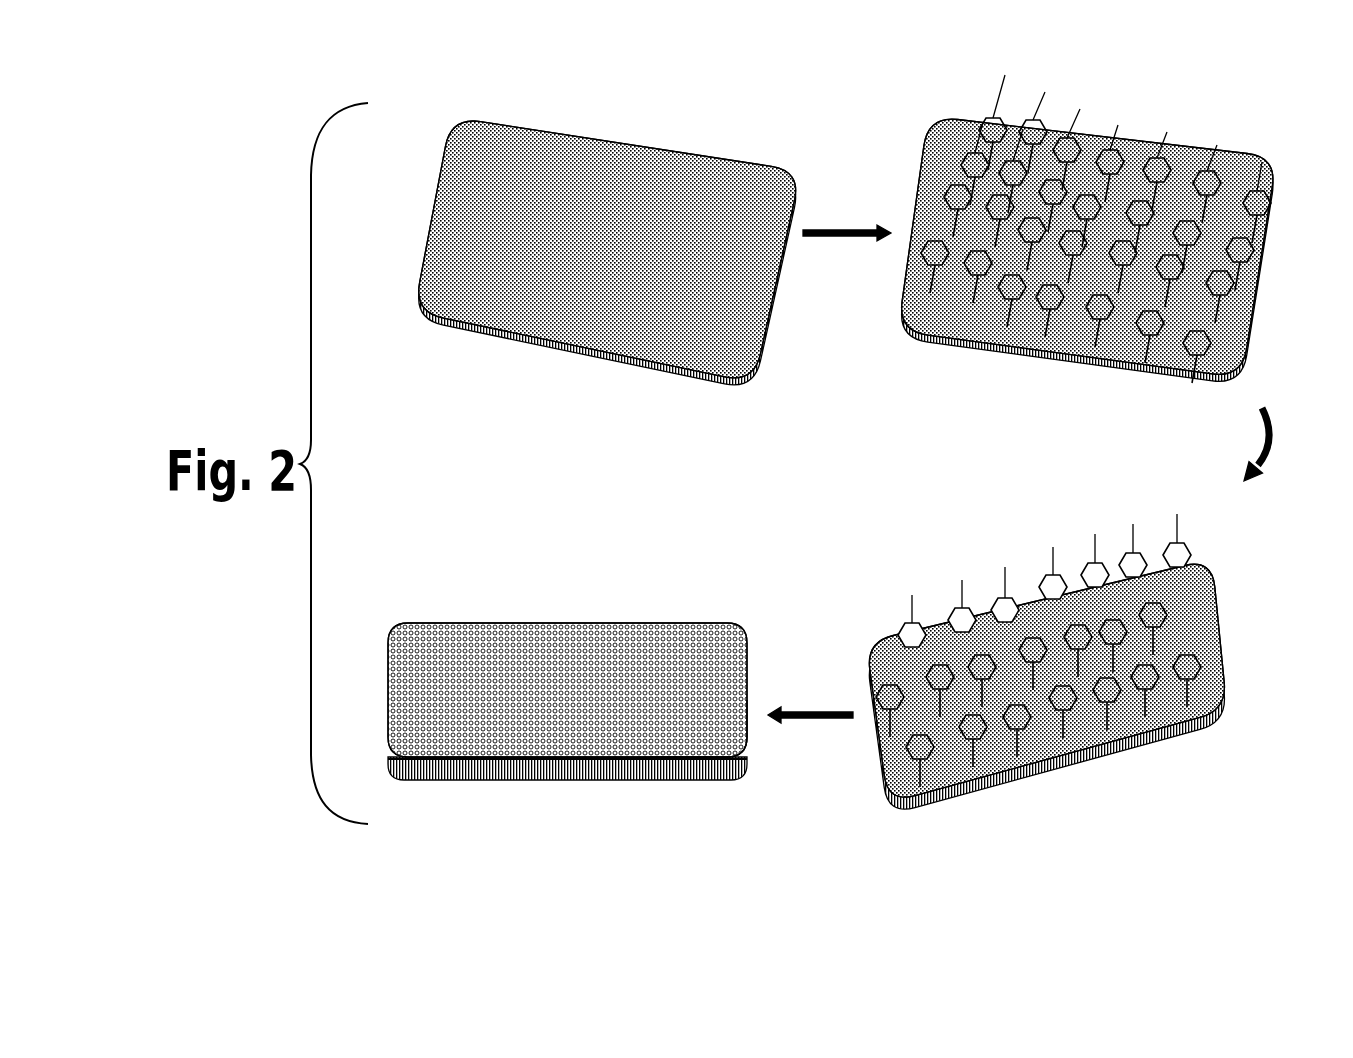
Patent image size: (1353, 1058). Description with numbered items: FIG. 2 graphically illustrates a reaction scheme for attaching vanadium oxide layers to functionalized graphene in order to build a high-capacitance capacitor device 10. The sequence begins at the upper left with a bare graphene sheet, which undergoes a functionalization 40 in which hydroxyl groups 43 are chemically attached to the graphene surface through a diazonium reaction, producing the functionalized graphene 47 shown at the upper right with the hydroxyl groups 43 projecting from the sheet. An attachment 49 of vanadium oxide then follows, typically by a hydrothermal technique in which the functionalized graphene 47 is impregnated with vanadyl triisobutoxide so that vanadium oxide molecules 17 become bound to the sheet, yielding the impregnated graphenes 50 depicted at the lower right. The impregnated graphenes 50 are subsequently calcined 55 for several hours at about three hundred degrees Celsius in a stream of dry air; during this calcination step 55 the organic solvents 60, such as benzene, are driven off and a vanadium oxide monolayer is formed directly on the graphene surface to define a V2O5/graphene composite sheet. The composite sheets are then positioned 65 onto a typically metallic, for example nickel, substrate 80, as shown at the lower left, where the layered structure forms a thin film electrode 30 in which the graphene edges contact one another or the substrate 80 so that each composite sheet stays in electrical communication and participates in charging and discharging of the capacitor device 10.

The capacitor device 10 is at (571, 694).
The vanadium oxide molecules 17 is at (1209, 524).
The thin film electrode 30 is at (571, 686).
The functionalization 40 is at (847, 222).
The hydroxyl groups 43 is at (1213, 122).
The functionalized graphene 47 is at (1094, 250).
The attachment of vanadium oxide layer 49 is at (1275, 430).
The impregnated graphenes 50 is at (1057, 639).
The calcination step 55 is at (810, 704).
The organic solvents 60 is at (910, 760).
The positioning 65 is at (810, 704).
The metallic substrate 80 is at (482, 765).